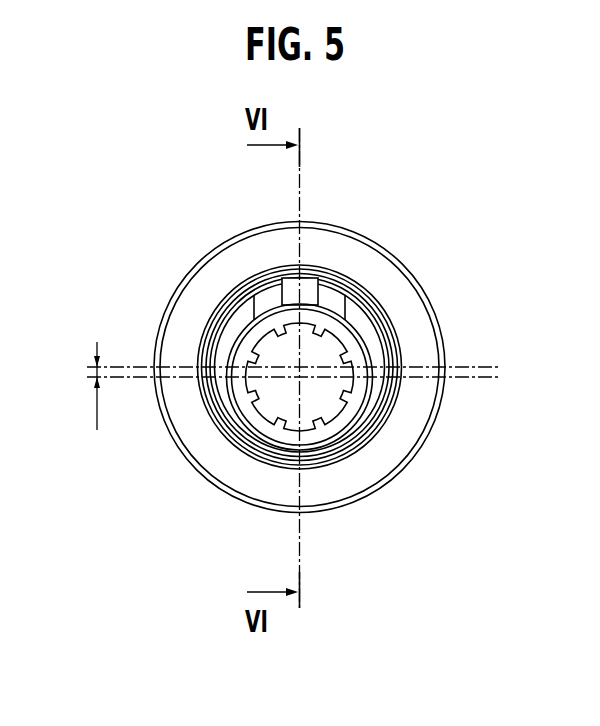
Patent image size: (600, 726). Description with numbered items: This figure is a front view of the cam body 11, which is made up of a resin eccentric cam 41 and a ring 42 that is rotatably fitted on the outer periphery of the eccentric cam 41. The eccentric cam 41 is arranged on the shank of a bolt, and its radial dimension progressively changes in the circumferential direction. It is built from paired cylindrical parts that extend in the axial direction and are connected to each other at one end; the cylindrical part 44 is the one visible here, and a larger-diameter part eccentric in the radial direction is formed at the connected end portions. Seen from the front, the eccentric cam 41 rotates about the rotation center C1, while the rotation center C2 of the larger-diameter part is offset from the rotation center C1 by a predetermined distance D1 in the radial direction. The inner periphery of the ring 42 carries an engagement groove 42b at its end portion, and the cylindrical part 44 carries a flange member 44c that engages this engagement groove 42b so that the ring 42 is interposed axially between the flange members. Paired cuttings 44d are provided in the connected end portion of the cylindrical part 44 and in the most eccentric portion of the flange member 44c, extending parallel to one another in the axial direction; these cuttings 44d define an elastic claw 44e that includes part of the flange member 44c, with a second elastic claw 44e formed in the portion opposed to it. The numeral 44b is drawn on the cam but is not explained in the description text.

The cam body 11 is at (356, 226).
The eccentric cam 41 is at (322, 448).
The ring 42 is at (193, 432).
The engagement groove 42b is at (257, 272).
The cylindrical part 44 is at (365, 390).
The inner bore of ring member 44b is at (280, 398).
The flange member 44c is at (240, 317).
The cuttings 44d is at (268, 298).
The elastic claw 44e is at (307, 287).
The rotation center C1 is at (300, 378).
The rotation center of the larger-diameter part C2 is at (300, 367).
The predetermined distance D1 is at (79, 386).